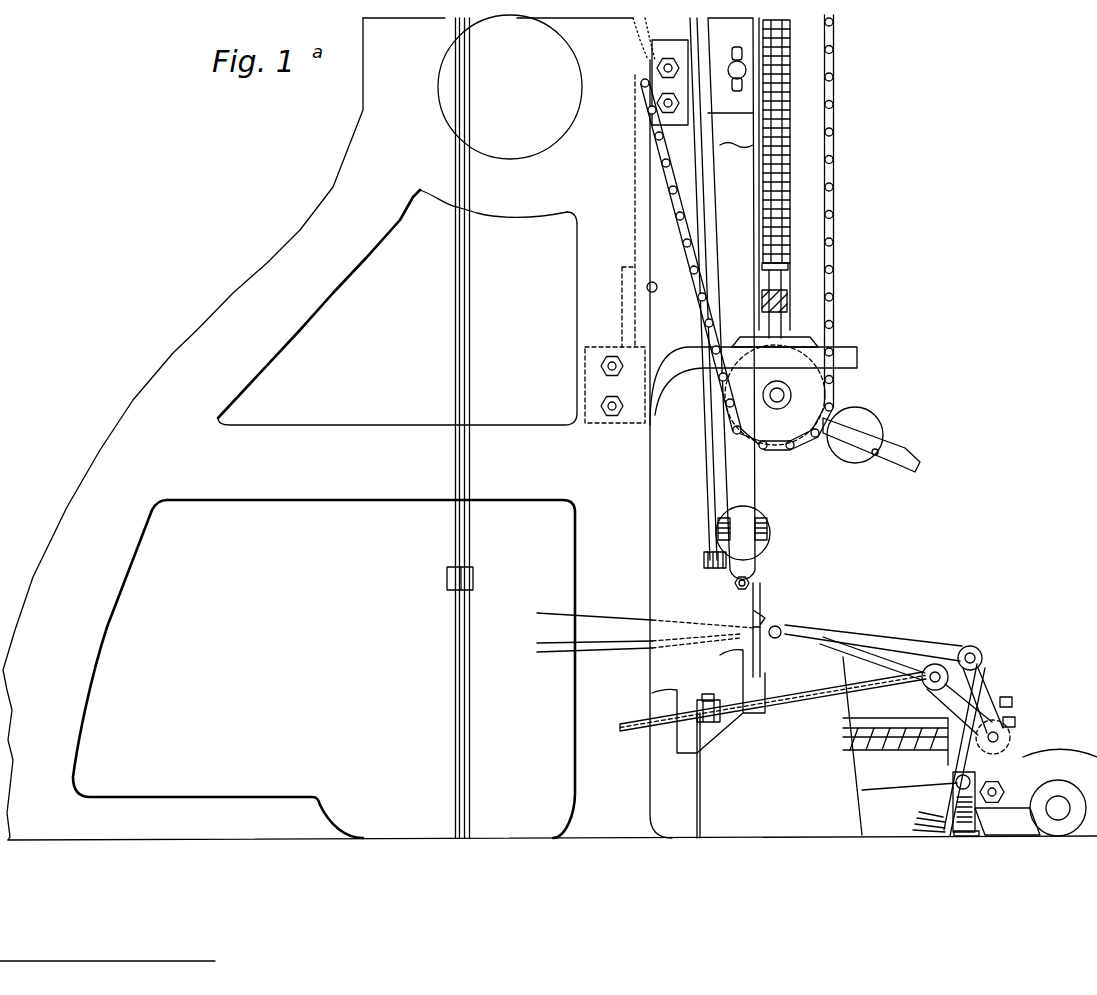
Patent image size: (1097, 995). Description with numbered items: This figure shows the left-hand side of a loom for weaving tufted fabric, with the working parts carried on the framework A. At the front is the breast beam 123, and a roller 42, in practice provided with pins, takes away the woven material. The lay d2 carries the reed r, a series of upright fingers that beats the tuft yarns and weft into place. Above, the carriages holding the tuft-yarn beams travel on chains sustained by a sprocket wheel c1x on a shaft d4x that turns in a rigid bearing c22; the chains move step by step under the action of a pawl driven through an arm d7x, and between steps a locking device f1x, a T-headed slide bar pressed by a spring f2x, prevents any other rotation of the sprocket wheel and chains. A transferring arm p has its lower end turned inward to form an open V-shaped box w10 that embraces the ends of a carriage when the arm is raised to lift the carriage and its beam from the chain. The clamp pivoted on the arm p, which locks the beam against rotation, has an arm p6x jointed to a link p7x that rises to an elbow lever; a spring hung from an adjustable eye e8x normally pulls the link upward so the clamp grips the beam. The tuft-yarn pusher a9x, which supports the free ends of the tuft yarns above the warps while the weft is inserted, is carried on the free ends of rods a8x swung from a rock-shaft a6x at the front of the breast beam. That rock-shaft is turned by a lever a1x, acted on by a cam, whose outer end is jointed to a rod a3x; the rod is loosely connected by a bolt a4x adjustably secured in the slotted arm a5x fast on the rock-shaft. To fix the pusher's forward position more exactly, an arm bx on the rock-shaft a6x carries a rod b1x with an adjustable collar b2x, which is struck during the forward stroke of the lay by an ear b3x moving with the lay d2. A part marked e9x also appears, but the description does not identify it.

The vertical shaft e9x is at (460, 310).
The framework A is at (721, 428).
The transferring arm p is at (760, 478).
The link p7x is at (706, 440).
The clamp arm p6x is at (712, 568).
The open V-shaped box w10 is at (768, 548).
The spring f2x is at (800, 246).
The rigid bearing c22 is at (800, 322).
The locking device f1x is at (790, 332).
The sprocket wheel c1x is at (812, 397).
The shaft d4x is at (779, 400).
The adjustable eye e8x is at (762, 590).
The tuft yarn pusher a9x is at (781, 629).
The reed r is at (763, 646).
The breast beam 123 is at (818, 645).
The rods a8x is at (926, 636).
The arm bx is at (962, 697).
The arm d7x is at (992, 706).
The rock-shaft a6x is at (996, 737).
The rod b1x is at (773, 701).
The adjustable collar b2x is at (703, 703).
The ear b3x is at (693, 738).
The lay d2 is at (701, 789).
The arm a5x is at (852, 760).
The bolt a4x is at (862, 790).
The lever a1x is at (913, 820).
The rod a3x is at (974, 822).
The roller 42 is at (1070, 758).